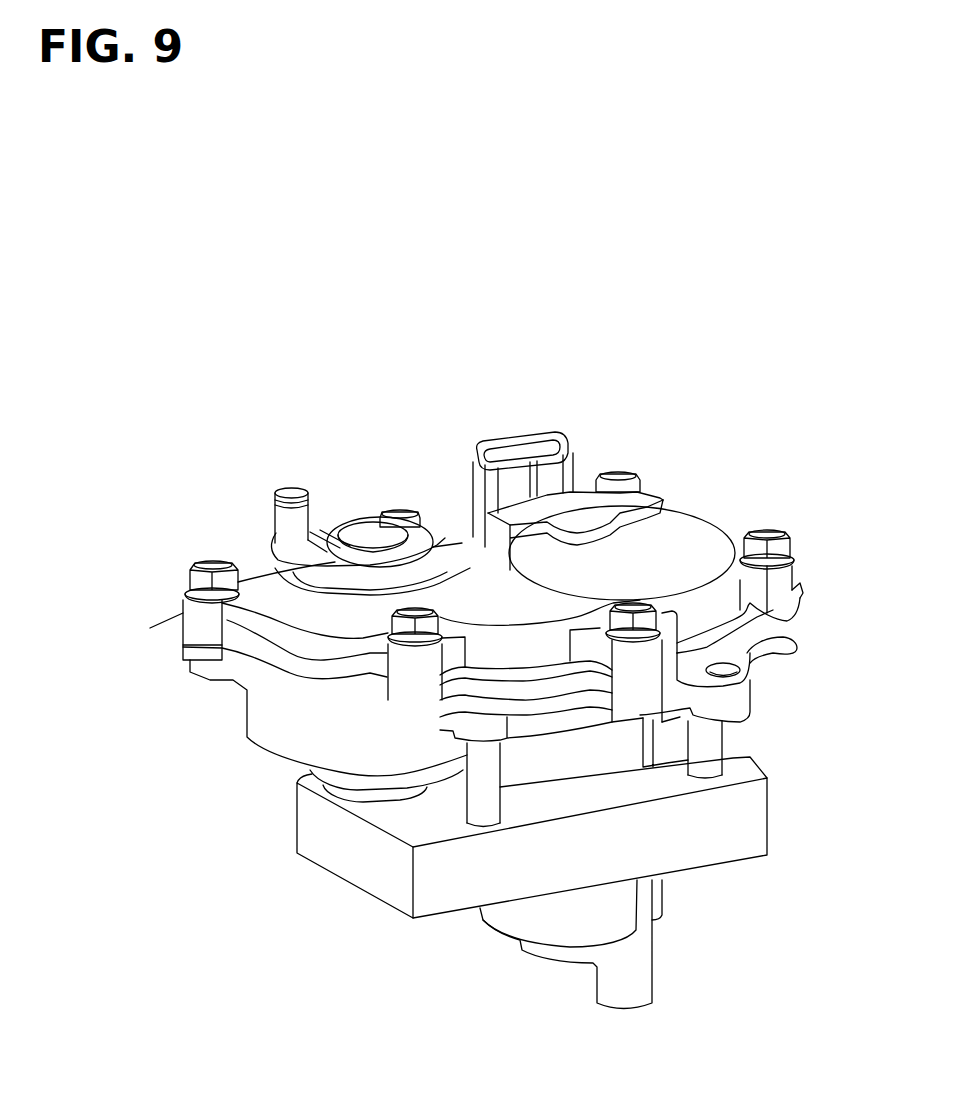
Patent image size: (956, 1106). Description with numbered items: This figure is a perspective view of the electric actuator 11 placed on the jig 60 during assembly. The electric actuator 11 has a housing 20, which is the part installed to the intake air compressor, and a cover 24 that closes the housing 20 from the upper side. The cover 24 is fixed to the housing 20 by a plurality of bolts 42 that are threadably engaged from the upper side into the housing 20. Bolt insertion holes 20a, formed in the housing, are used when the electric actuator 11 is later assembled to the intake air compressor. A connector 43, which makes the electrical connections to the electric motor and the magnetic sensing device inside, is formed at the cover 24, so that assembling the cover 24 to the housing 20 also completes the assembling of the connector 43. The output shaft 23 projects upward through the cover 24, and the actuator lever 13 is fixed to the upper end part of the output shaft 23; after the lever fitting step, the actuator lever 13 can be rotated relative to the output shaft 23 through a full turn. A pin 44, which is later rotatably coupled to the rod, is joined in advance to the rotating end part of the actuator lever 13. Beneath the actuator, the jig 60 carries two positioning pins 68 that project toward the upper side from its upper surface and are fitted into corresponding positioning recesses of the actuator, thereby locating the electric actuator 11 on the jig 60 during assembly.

The electric actuator 11 is at (690, 400).
The actuator lever 13 is at (333, 535).
The housing 20 is at (282, 727).
The bolt insertion holes 20a is at (750, 661).
The output shaft 23 is at (365, 527).
The cover 24 is at (190, 618).
The bolts 42 is at (422, 612).
The connector 43 is at (500, 440).
The pin 44 is at (282, 524).
The jig 60 is at (352, 860).
The positioning pins 68 is at (707, 745).